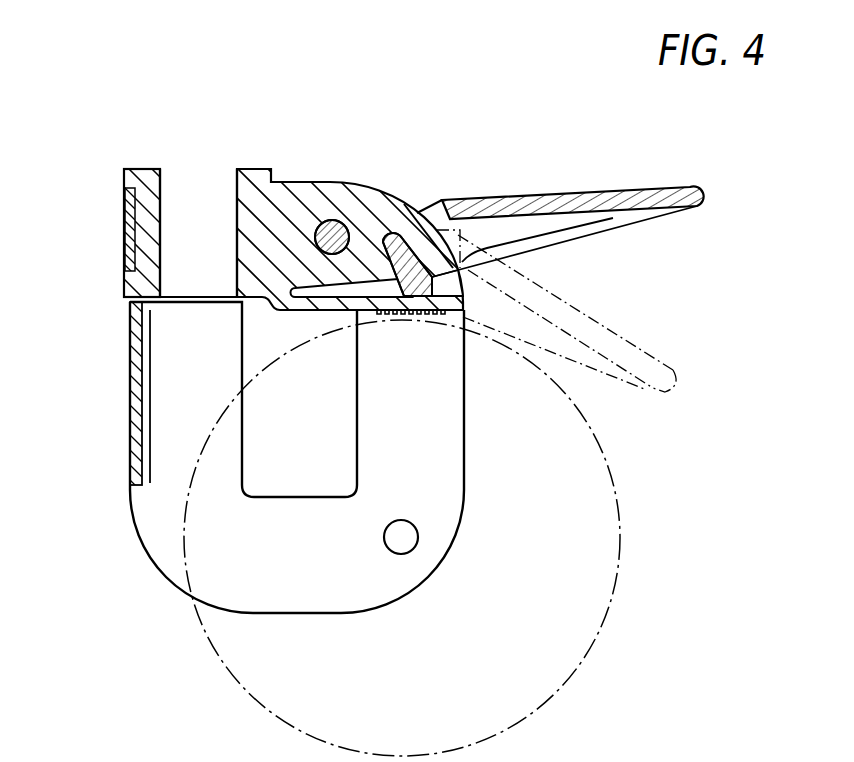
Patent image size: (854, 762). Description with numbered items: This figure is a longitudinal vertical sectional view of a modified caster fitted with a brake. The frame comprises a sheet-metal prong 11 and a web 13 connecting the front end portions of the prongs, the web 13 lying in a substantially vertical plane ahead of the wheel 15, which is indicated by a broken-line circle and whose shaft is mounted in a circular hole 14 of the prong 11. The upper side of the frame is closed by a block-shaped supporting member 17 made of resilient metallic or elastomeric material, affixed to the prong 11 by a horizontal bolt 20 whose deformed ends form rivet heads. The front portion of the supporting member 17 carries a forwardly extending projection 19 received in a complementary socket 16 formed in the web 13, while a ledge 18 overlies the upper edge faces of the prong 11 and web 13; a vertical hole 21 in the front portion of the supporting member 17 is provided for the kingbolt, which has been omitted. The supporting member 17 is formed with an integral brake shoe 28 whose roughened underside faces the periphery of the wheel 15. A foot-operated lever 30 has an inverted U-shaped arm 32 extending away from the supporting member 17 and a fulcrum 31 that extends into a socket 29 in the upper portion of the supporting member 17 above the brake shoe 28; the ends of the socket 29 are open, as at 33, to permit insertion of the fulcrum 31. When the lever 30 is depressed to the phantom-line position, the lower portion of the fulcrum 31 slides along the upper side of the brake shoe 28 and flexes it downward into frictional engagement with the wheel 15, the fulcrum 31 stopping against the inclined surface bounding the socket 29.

The prong 11 is at (157, 530).
The web 13 is at (129, 390).
The circular hole 14 is at (408, 540).
The wheel 15 is at (624, 548).
The socket 16 is at (128, 267).
The supporting member 17 is at (292, 195).
The ledge 18 is at (123, 175).
The projection 19 is at (127, 289).
The bolt 20 is at (328, 221).
The vertical hole 21 is at (172, 229).
The brake shoe 28 is at (323, 311).
The socket 29 is at (372, 242).
The foot-operated lever 30 is at (540, 198).
The fulcrum 31 is at (413, 222).
The arm 32 is at (592, 226).
The open ends of socket 33 is at (449, 287).